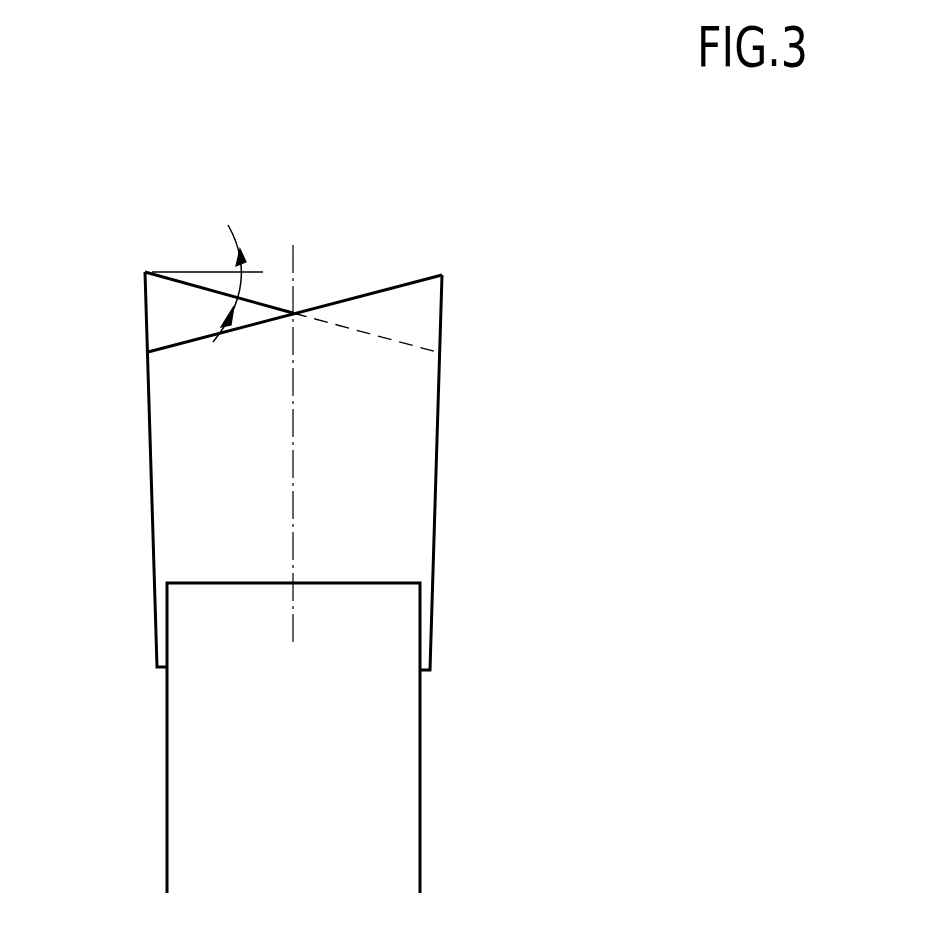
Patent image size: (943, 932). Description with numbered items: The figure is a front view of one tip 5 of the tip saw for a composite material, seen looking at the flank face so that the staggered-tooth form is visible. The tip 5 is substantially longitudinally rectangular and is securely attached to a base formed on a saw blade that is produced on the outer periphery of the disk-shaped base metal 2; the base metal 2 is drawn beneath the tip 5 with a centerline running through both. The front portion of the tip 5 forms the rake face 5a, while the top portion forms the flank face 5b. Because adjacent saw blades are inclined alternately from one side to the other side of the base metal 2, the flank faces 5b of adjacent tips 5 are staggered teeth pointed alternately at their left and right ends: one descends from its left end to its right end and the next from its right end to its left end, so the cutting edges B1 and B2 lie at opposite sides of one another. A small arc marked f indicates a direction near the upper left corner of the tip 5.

The base metal 2 is at (392, 782).
The tip 5 is at (435, 470).
The rake face 5a is at (353, 403).
The flank face 5b is at (263, 300).
The cutting edge B1 is at (442, 272).
The cutting edge B2 is at (147, 273).
The feed / pivot direction arrow f is at (224, 280).